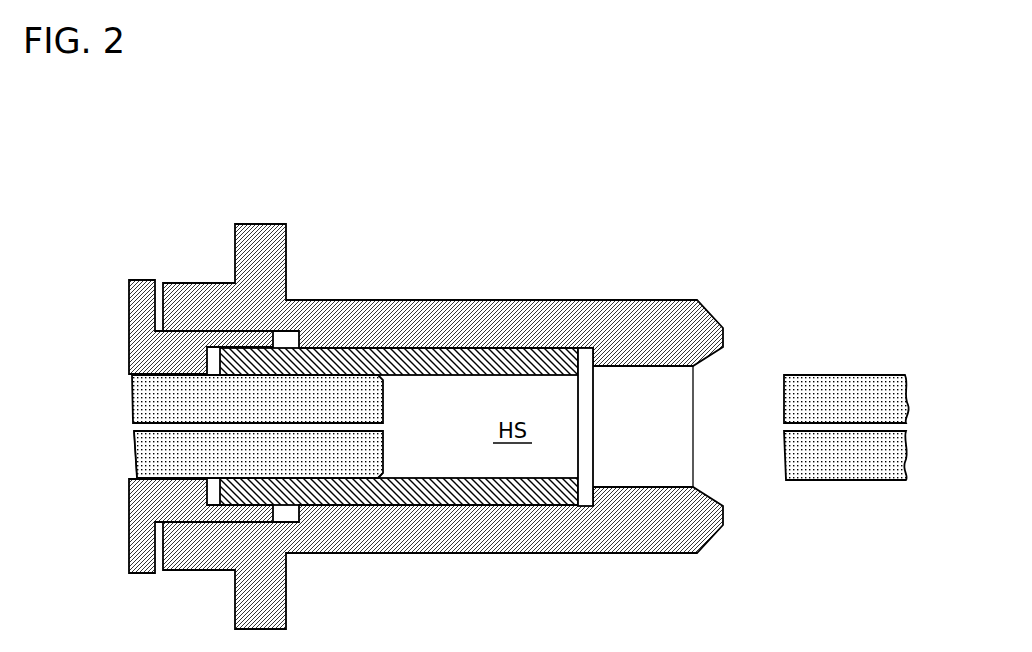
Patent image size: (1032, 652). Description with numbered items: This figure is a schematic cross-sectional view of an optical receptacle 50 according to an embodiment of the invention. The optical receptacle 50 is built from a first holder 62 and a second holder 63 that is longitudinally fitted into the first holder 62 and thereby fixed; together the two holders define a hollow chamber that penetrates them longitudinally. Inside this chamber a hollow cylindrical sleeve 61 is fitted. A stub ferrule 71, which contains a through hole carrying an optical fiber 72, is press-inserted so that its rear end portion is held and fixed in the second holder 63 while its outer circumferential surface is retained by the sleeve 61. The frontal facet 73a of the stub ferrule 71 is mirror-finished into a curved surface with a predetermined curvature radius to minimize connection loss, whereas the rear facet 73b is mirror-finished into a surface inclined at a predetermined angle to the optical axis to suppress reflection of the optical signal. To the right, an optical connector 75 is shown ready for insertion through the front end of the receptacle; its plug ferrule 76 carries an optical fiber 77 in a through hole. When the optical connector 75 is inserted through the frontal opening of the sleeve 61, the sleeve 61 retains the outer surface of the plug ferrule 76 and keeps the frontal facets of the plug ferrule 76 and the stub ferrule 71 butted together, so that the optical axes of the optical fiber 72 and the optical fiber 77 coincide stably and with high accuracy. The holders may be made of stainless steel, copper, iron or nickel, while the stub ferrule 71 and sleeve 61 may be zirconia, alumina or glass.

The optical receptacle 50 is at (556, 236).
The sleeve 61 is at (413, 357).
The first holder 62 is at (325, 305).
The second holder 63 is at (140, 283).
The stub ferrule 71 is at (138, 401).
The optical fiber 72 is at (140, 427).
The frontal facet 73a is at (385, 452).
The rear facet 73b is at (137, 450).
The optical connector 75 is at (887, 328).
The plug ferrule 76 is at (837, 375).
The optical fiber 77 is at (842, 431).